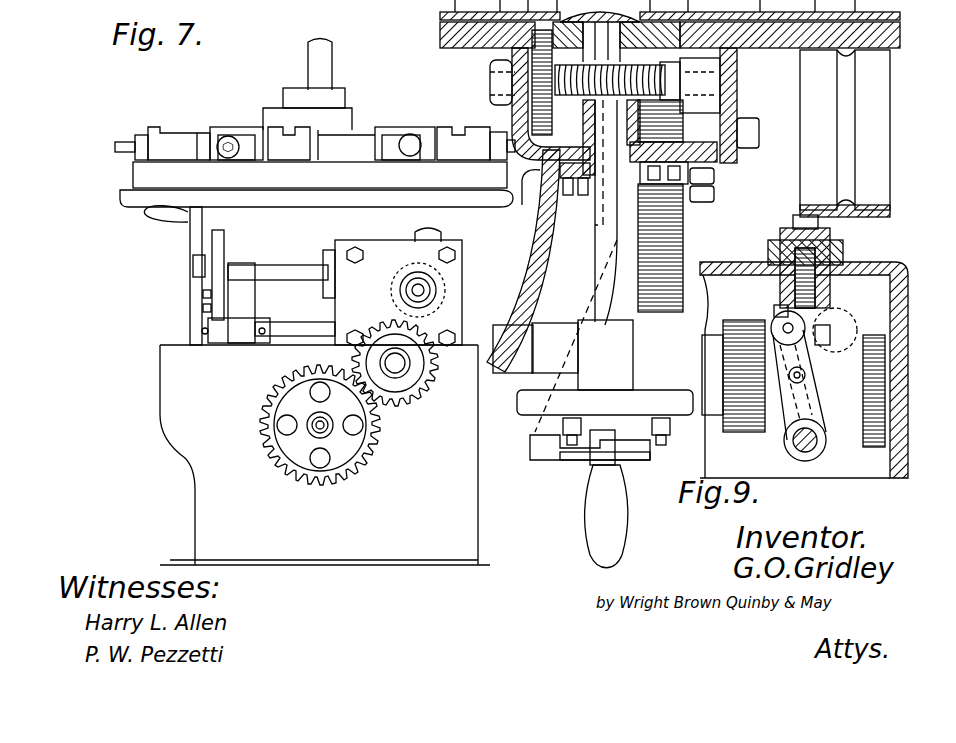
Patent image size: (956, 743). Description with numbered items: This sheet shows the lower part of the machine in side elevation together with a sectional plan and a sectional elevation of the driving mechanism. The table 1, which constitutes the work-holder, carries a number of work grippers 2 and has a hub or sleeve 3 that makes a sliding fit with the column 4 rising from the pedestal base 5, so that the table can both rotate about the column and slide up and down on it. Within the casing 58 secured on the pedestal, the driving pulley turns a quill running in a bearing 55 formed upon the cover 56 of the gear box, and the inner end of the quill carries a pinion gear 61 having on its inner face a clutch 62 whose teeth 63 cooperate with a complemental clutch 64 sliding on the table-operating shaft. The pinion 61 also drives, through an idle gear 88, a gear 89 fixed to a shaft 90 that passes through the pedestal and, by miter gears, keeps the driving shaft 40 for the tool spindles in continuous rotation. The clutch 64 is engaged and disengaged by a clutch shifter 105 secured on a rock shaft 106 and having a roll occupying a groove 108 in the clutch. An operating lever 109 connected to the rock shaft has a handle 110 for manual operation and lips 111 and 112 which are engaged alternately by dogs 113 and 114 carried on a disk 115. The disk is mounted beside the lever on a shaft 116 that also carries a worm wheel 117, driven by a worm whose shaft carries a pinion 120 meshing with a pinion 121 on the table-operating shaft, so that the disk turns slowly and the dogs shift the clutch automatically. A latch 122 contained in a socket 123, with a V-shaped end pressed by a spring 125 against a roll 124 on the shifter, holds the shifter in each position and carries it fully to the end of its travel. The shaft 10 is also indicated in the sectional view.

In FIG. 7, the table 1 is at (150, 172).
In FIG. 7, the work grippers 2 is at (240, 132).
In FIG. 7, the hub or sleeve 3 is at (355, 110).
In FIG. 7, the column 4 is at (340, 96).
In FIG. 7, the driving shaft 40 is at (322, 42).
In FIG. 7, the pedestal base 5 is at (160, 385).
In FIG. 8, the shaft 10 is at (600, 226).
In FIG. 8, the bearing 55 is at (790, 119).
In FIG. 8, the cover 56 is at (738, 122).
In FIG. 8, the casing 58 is at (534, 278).
In FIG. 7, the pinion gear 61 is at (440, 300).
In FIG. 9, the pinion gear 61 is at (703, 262).
In FIG. 9, the clutch 62 is at (790, 438).
In FIG. 9, the teeth 63 is at (770, 400).
In FIG. 8, the complemental clutch 64 is at (628, 64).
In FIG. 9, the complemental clutch 64 is at (842, 335).
In FIG. 7, the idle gear 88 is at (420, 392).
In FIG. 7, the gear 89 is at (360, 452).
In FIG. 8, the gear 89 is at (660, 308).
In FIG. 7, the shaft 90 is at (318, 428).
In FIG. 9, the clutch shifter 105 is at (800, 324).
In FIG. 7, the rock shaft 106 is at (288, 332).
In FIG. 9, the rock shaft 106 is at (818, 444).
In FIG. 9, the groove 108 is at (822, 330).
In FIG. 7, the operating lever 109 is at (196, 232).
In FIG. 8, the operating lever 109 is at (603, 466).
In FIG. 7, the handle 110 is at (150, 215).
In FIG. 8, the handle 110 is at (594, 536).
In FIG. 7, the lip 111 is at (195, 265).
In FIG. 8, the lip 111 is at (652, 456).
In FIG. 7, the lip 112 is at (205, 280).
In FIG. 8, the lip 112 is at (550, 440).
In FIG. 7, the dog 113 is at (201, 293).
In FIG. 8, the dog 113 is at (572, 445).
In FIG. 7, the dog 114 is at (201, 308).
In FIG. 8, the dog 114 is at (664, 438).
In FIG. 7, the disk 115 is at (222, 240).
In FIG. 8, the disk 115 is at (636, 402).
In FIG. 7, the shaft 116 is at (290, 265).
In FIG. 8, the shaft 116 is at (600, 258).
In FIG. 8, the worm wheel 117 is at (572, 108).
In FIG. 8, the pinion 120 is at (515, 122).
In FIG. 8, the pinion 121 is at (522, 58).
In FIG. 9, the latch 122 is at (784, 285).
In FIG. 9, the socket 123 is at (800, 242).
In FIG. 9, the roll 124 is at (778, 312).
In FIG. 9, the spring 125 is at (802, 216).